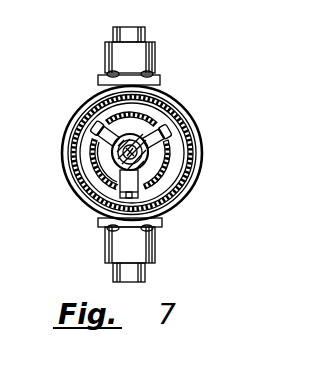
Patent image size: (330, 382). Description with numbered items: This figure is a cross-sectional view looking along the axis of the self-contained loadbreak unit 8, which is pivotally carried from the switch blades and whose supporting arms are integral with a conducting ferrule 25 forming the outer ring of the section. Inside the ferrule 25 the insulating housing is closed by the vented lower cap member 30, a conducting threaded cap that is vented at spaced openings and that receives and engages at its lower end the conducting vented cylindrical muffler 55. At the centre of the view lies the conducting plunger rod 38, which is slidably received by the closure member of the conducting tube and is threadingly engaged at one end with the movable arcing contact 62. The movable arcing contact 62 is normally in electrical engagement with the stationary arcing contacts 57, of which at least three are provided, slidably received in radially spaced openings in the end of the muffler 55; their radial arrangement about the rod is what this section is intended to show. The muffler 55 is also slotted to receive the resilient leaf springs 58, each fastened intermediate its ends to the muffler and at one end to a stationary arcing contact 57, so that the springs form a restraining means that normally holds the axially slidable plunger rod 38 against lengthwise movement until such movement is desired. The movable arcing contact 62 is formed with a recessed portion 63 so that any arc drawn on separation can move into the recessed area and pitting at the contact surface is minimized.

The loadbreak unit 8 is at (190, 98).
The conducting ferrule 25 is at (63, 152).
The vented lower cap member 30 is at (76, 126).
The plunger rod 38 is at (137, 182).
The vented cylindrical muffler 55 is at (170, 170).
The stationary arcing contact 57 is at (155, 124).
The resilient leaf spring 58 is at (168, 136).
The movable arcing contact 62 is at (103, 153).
The recessed portion 63 is at (110, 178).